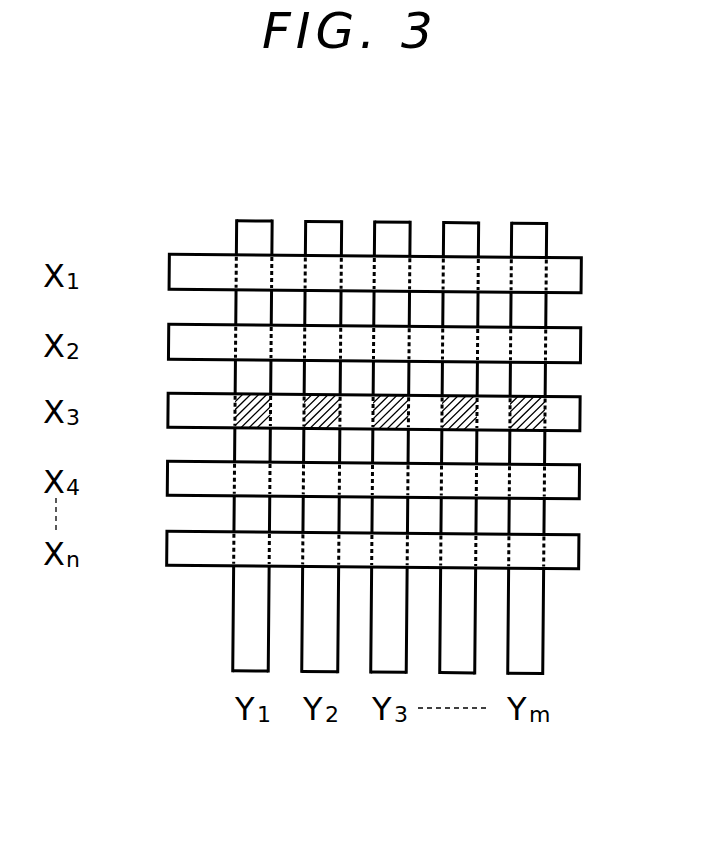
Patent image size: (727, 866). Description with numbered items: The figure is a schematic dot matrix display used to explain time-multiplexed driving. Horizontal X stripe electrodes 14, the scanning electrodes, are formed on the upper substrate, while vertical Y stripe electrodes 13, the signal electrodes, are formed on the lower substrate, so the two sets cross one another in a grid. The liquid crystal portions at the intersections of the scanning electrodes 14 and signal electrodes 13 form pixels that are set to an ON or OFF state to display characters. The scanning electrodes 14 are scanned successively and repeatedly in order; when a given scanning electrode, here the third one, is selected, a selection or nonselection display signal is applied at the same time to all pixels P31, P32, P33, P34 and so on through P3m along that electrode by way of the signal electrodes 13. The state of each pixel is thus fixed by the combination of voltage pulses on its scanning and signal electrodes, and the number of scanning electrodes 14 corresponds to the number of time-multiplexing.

The Y stripe electrodes 13 is at (247, 624).
The X stripe electrodes 14 is at (203, 270).
The pixel P31 is at (247, 412).
The pixel P32 is at (304, 428).
The pixel at X3-Y3 intersection P33 is at (385, 415).
The pixel at X3-Y4 intersection P34 is at (454, 415).
The pixel P3m is at (547, 395).